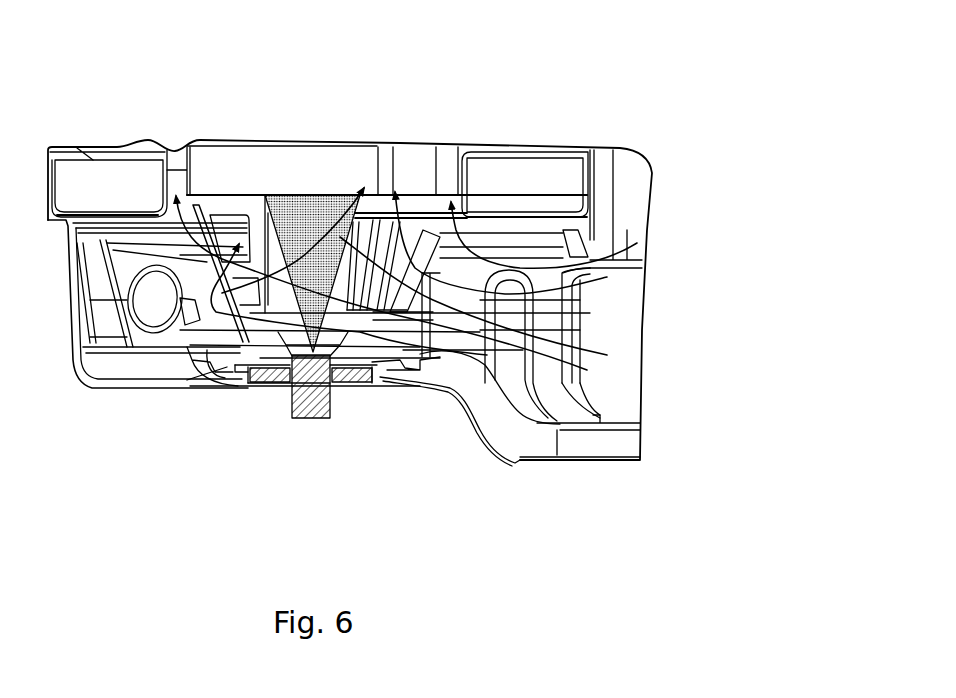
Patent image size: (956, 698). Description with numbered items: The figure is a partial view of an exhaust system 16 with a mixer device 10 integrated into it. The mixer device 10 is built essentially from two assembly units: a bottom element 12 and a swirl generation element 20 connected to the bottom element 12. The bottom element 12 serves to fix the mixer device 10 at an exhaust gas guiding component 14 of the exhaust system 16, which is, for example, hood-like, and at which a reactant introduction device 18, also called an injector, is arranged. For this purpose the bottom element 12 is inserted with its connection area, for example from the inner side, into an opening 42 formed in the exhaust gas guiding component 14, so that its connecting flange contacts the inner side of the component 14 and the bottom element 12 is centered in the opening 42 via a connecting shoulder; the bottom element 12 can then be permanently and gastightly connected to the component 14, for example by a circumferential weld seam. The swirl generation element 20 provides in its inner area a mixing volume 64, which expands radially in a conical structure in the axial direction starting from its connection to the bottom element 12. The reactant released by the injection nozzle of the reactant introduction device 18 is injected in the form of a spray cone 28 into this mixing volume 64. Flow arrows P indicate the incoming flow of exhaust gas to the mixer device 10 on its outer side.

The exhaust system 16 is at (572, 93).
The swirl generation element 20 is at (232, 208).
The spray cone 28 is at (325, 215).
The mixing volume 64 is at (393, 205).
The flow arrows P is at (481, 260).
The opening 42 is at (233, 377).
The mixer device 10 is at (277, 432).
The reactant introduction device 18 is at (325, 447).
The bottom element 12 is at (375, 362).
The exhaust gas guiding component 14 is at (487, 437).